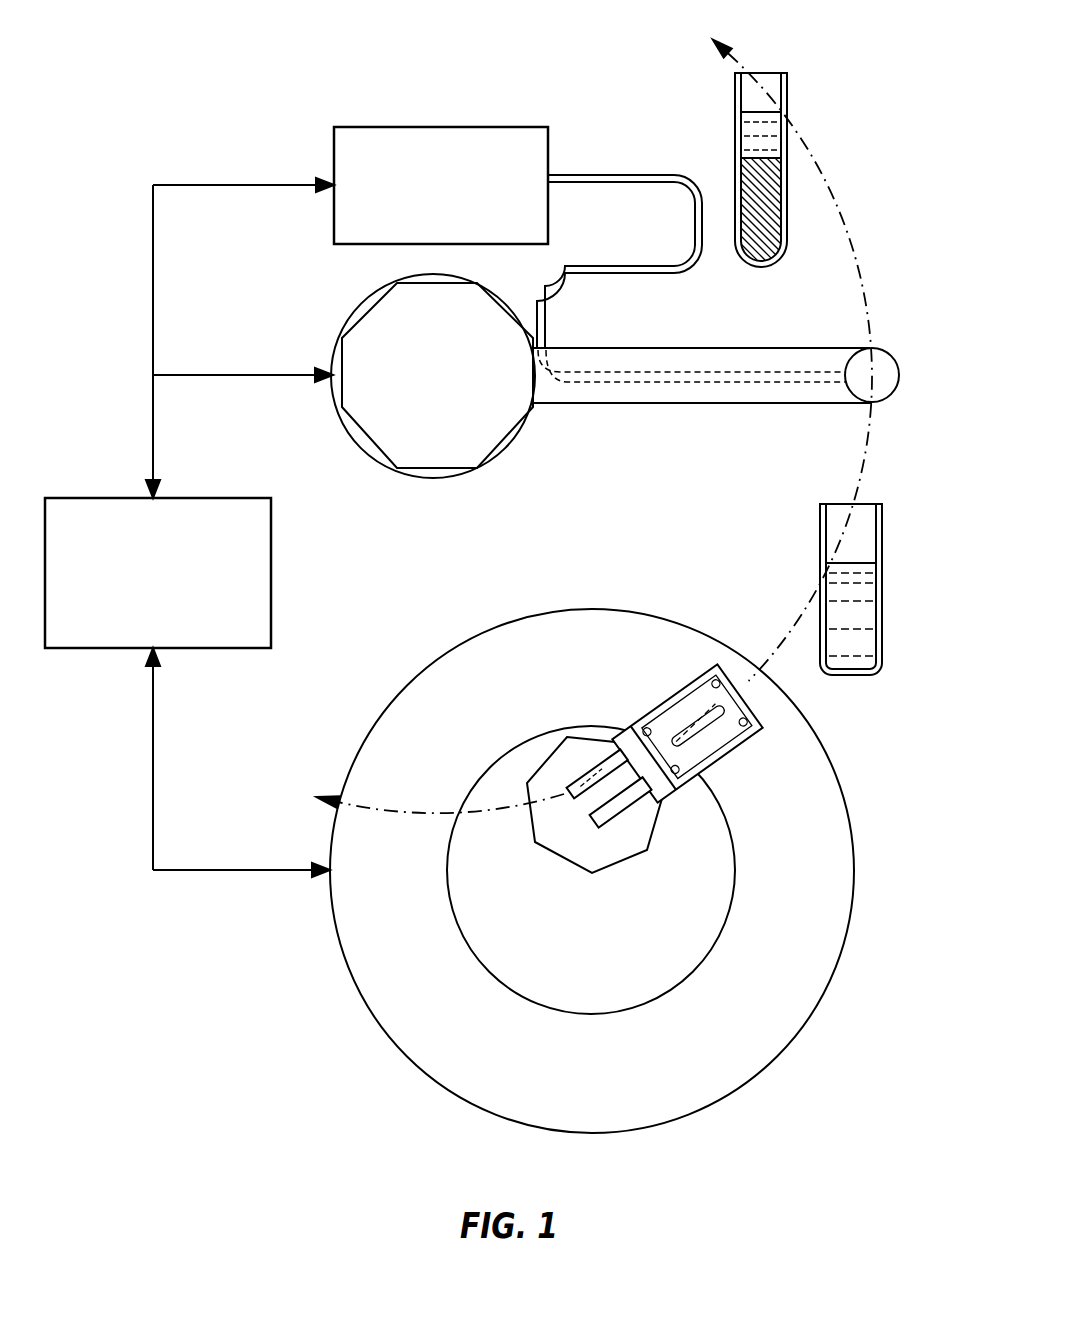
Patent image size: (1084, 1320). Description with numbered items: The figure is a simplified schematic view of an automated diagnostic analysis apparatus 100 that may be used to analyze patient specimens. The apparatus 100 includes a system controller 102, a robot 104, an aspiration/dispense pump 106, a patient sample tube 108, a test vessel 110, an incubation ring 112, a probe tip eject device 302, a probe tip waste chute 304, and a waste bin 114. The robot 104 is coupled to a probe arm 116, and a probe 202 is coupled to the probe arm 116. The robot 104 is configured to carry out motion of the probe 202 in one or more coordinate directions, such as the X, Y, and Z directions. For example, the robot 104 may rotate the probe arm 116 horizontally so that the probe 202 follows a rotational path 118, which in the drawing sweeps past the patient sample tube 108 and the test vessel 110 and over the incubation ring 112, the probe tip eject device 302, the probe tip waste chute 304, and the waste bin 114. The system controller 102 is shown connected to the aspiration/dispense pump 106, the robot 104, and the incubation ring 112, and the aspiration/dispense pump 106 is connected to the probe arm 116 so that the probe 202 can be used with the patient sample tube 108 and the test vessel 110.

The automated diagnostic analysis apparatus 100 is at (240, 52).
The system controller 102 is at (226, 650).
The robot 104 is at (436, 480).
The aspiration/dispense pump 106 is at (426, 127).
The patient sample tube 108 is at (735, 165).
The test vessel 110 is at (820, 547).
The incubation ring 112 is at (511, 618).
The waste bin 114 is at (560, 860).
The probe arm 116 is at (677, 405).
The rotational path 118 is at (877, 445).
The probe 202 is at (898, 367).
The probe tip eject device 302 is at (723, 730).
The probe tip waste chute 304 is at (692, 780).